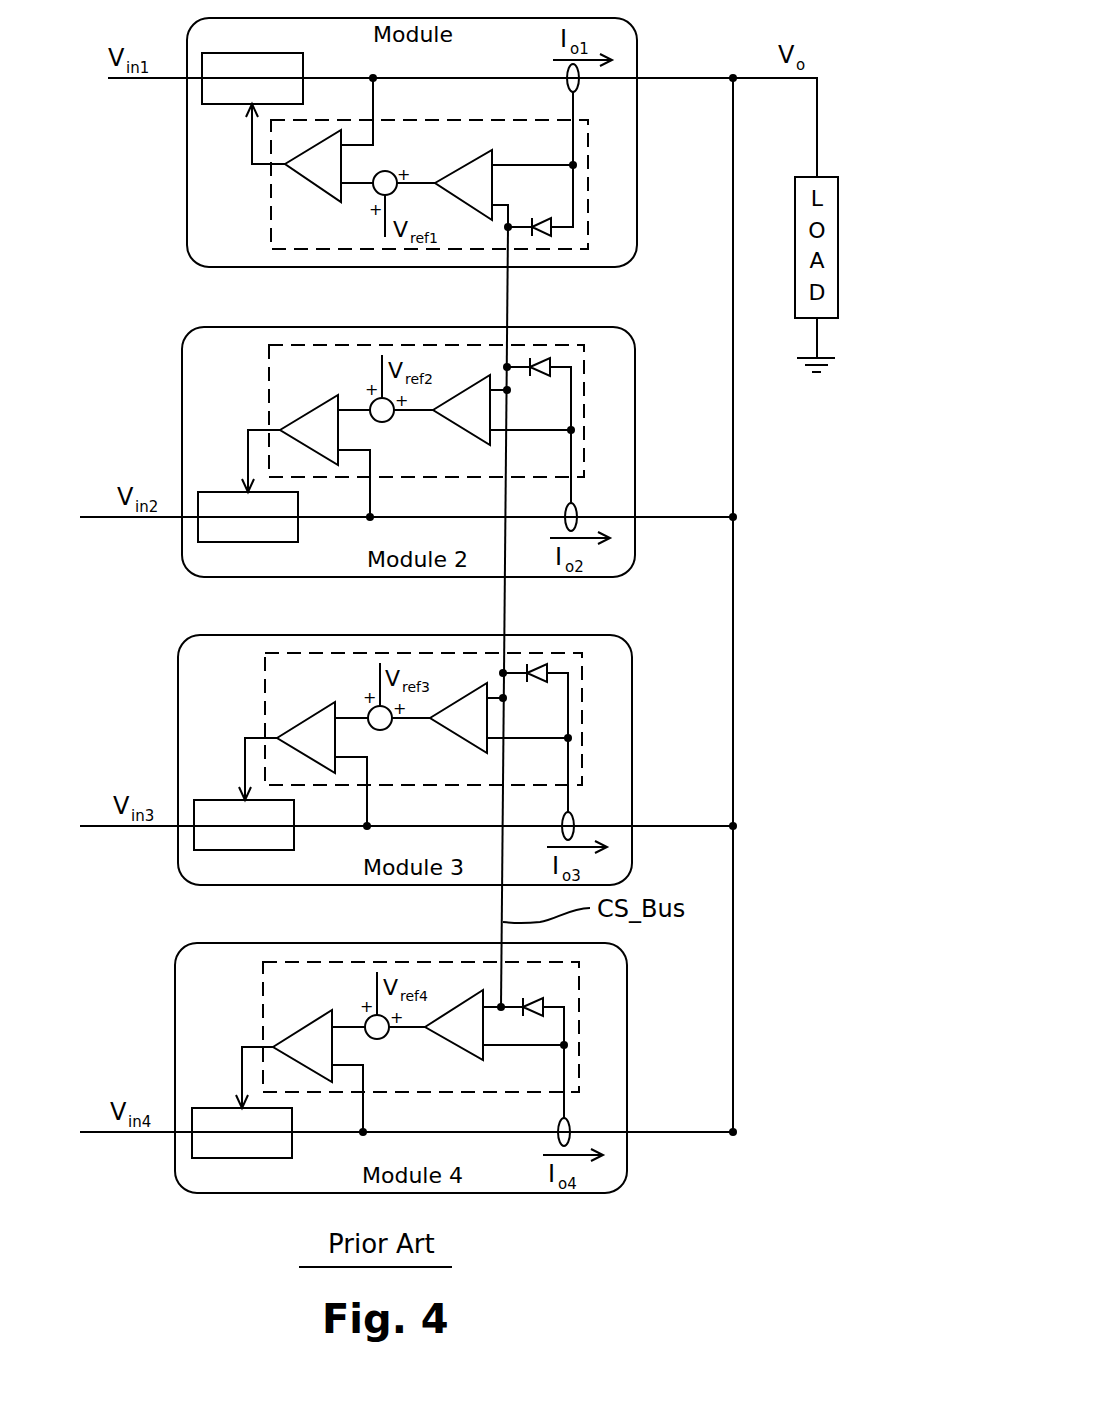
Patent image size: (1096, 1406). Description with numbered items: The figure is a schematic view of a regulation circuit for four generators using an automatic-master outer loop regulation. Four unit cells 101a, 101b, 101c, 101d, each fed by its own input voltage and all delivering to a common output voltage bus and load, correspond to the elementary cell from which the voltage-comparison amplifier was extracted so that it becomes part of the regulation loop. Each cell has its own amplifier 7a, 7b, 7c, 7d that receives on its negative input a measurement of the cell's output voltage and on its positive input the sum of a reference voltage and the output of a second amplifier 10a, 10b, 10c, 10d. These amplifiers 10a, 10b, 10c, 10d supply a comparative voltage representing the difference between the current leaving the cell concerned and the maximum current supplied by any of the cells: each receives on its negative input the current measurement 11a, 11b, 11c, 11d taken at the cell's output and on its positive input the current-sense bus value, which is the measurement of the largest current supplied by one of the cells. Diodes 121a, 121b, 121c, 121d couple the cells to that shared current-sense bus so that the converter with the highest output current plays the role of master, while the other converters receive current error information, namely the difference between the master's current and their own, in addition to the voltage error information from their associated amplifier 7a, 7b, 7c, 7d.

The unit cell 101a is at (223, 97).
The unit cell 101b is at (223, 530).
The unit cell 101c is at (220, 838).
The unit cell 101d is at (217, 1146).
The amplifier 7a is at (312, 178).
The amplifier 7b is at (320, 412).
The amplifier 7c is at (316, 720).
The amplifier 7d is at (313, 1028).
The amplifier 10a is at (470, 162).
The amplifier 10b is at (465, 430).
The amplifier 10c is at (461, 738).
The amplifier 10d is at (457, 1045).
The current measurement 11a is at (583, 88).
The current measurement 11b is at (580, 506).
The current measurement 11c is at (576, 814).
The current measurement 11d is at (572, 1121).
The diode 121a is at (546, 215).
The diode 121b is at (540, 360).
The diode 121c is at (536, 668).
The diode 121d is at (538, 1000).